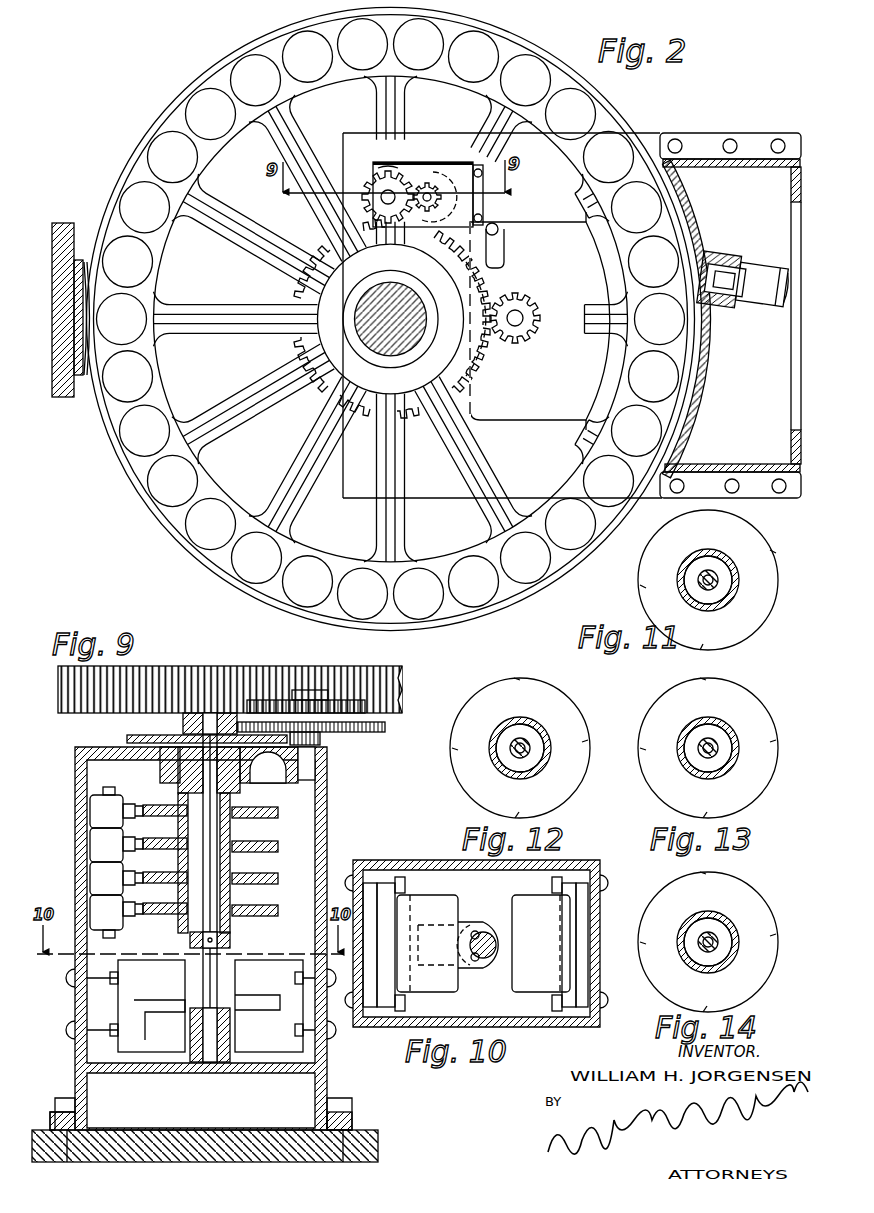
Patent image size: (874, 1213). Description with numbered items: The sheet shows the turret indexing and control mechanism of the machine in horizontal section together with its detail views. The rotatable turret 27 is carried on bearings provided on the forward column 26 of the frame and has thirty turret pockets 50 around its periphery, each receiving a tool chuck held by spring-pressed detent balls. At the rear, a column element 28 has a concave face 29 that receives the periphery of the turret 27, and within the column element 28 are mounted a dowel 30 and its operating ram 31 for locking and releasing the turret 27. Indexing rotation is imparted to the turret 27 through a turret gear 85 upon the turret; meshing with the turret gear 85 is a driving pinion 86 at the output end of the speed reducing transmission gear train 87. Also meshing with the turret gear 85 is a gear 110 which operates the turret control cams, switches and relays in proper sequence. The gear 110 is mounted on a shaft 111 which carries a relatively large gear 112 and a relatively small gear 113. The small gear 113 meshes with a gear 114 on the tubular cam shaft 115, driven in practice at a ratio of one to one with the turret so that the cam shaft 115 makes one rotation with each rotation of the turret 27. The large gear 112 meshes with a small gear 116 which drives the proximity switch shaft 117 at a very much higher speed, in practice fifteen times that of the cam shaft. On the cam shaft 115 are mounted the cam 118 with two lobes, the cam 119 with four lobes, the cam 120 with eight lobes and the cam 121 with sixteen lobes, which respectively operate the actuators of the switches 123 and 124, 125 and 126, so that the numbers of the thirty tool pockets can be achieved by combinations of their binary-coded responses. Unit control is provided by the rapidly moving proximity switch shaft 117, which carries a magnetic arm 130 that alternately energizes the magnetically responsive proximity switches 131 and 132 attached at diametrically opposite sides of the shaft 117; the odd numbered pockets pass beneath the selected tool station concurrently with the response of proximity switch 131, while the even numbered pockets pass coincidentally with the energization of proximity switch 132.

In FIG. 2, the forward column 26 is at (357, 319).
In FIG. 2, the turret 27 is at (391, 318).
In FIG. 2, the column element 28 is at (745, 160).
In FIG. 2, the concave face 29 is at (700, 319).
In FIG. 2, the dowel 30 is at (718, 262).
In FIG. 2, the operating ram 31 is at (766, 270).
In FIG. 2, the turret pocket 50 is at (378, 319).
In FIG. 2, the turret gear 85 is at (490, 294).
In FIG. 9, the turret gear 85 is at (212, 688).
In FIG. 2, the driving pinion 86 is at (527, 306).
In FIG. 2, the speed reducing transmission gear train 87 is at (538, 252).
In FIG. 2, the gear 110 is at (372, 184).
In FIG. 9, the gear 110 is at (330, 698).
In FIG. 2, the shaft 111 is at (392, 172).
In FIG. 9, the shaft 111 is at (326, 776).
In FIG. 9, the relatively large gear 112 is at (380, 733).
In FIG. 9, the relatively small gear 113 is at (318, 740).
In FIG. 2, the gear 114 is at (448, 185).
In FIG. 9, the gear 114 is at (127, 740).
In FIG. 9, the tubular cam shaft 115 is at (176, 800).
In FIG. 11, the tubular cam shaft 115 is at (712, 560).
In FIG. 12, the tubular cam shaft 115 is at (528, 726).
In FIG. 13, the tubular cam shaft 115 is at (714, 726).
In FIG. 14, the tubular cam shaft 115 is at (686, 922).
In FIG. 2, the small gear 116 is at (428, 186).
In FIG. 9, the small gear 116 is at (183, 727).
In FIG. 2, the proximity switch shaft 117 is at (492, 222).
In FIG. 9, the proximity switch shaft 117 is at (172, 770).
In FIG. 10, the proximity switch shaft 117 is at (490, 958).
In FIG. 11, the proximity switch shaft 117 is at (725, 575).
In FIG. 12, the proximity switch shaft 117 is at (530, 745).
In FIG. 13, the proximity switch shaft 117 is at (722, 745).
In FIG. 14, the proximity switch shaft 117 is at (688, 958).
In FIG. 9, the cam 118 is at (270, 907).
In FIG. 11, the cam 118 is at (640, 577).
In FIG. 9, the cam 119 is at (270, 875).
In FIG. 12, the cam 119 is at (576, 742).
In FIG. 9, the cam 120 is at (270, 843).
In FIG. 13, the cam 120 is at (756, 712).
In FIG. 9, the cam 121 is at (259, 816).
In FIG. 14, the cam 121 is at (738, 896).
In FIG. 9, the switch 123 is at (141, 909).
In FIG. 9, the switch 124 is at (141, 878).
In FIG. 9, the switch 125 is at (141, 844).
In FIG. 9, the switch 126 is at (141, 811).
In FIG. 9, the magnetic arm 130 is at (167, 1010).
In FIG. 10, the magnetic arm 130 is at (472, 928).
In FIG. 9, the proximity switch 131 is at (152, 978).
In FIG. 10, the proximity switch 131 is at (428, 906).
In FIG. 9, the proximity switch 132 is at (257, 978).
In FIG. 10, the proximity switch 132 is at (528, 906).